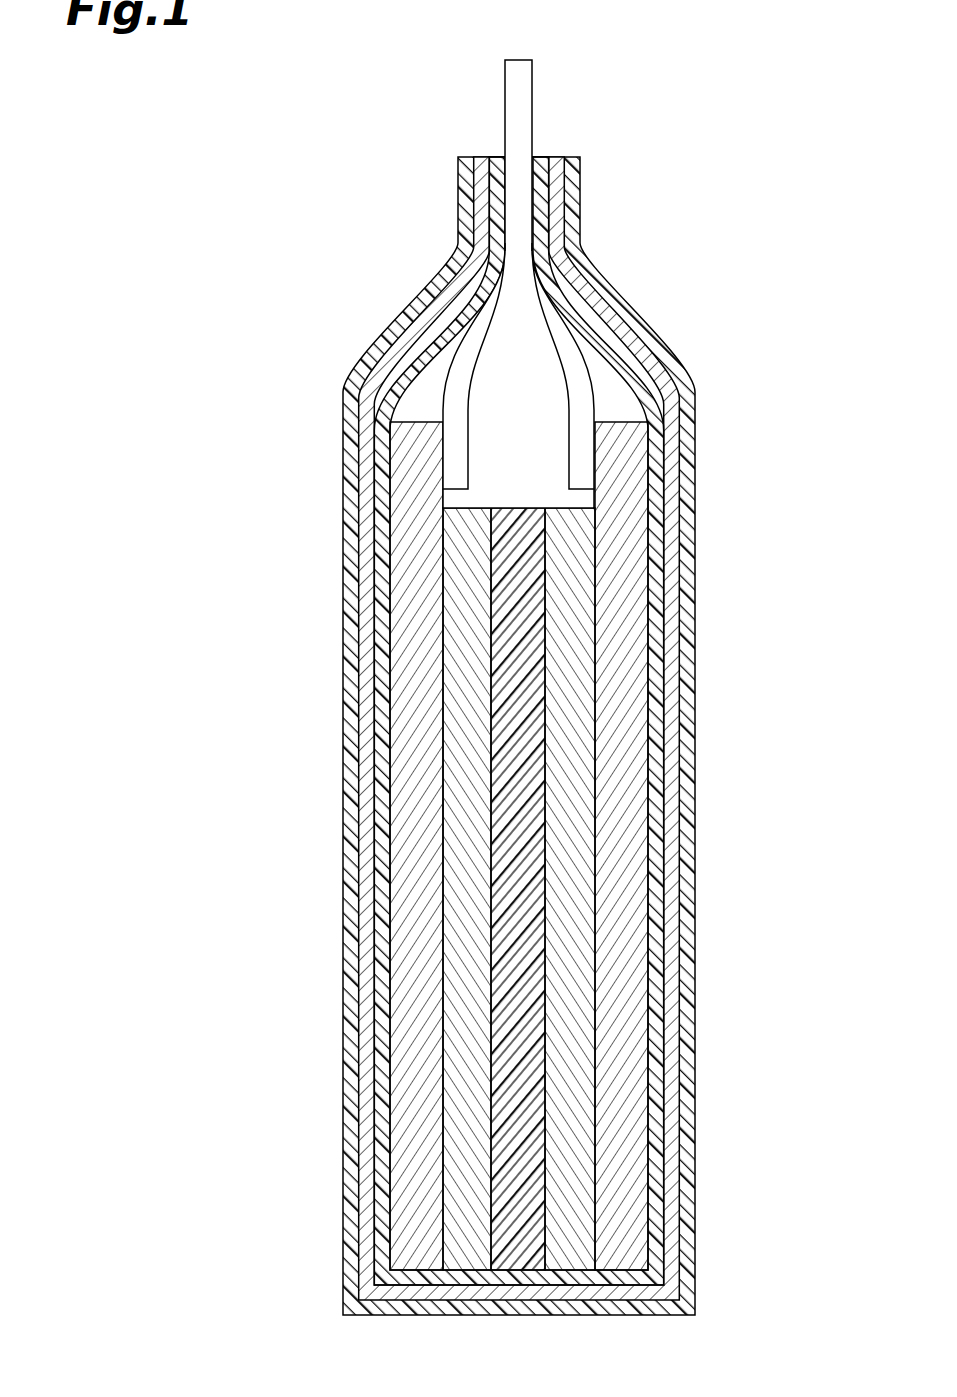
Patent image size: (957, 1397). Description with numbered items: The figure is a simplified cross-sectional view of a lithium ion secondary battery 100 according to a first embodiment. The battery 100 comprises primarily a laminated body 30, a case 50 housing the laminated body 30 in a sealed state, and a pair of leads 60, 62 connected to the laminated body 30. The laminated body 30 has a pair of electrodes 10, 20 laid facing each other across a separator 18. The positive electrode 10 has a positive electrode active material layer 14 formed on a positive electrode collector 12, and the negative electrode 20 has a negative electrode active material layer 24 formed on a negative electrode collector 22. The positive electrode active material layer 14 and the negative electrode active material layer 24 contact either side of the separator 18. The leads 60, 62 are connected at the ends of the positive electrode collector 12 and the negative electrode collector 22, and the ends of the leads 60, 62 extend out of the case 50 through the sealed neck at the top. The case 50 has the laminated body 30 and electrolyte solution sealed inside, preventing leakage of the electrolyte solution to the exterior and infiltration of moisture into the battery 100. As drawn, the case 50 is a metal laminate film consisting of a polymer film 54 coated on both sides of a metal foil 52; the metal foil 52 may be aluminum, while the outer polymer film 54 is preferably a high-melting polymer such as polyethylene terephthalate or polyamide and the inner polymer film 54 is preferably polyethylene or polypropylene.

The lithium ion secondary battery 100 is at (505, 661).
The positive electrode 10 is at (427, 846).
The positive electrode collector 12 is at (605, 633).
The positive electrode active material layer 14 is at (565, 677).
The separator 18 is at (515, 722).
The negative electrode 20 is at (349, 846).
The negative electrode collector 22 is at (410, 800).
The negative electrode active material layer 24 is at (455, 757).
The laminated body 30 is at (399, 846).
The case 50 is at (596, 736).
The metal foil 52 is at (672, 915).
The polymer film 54 is at (566, 736).
The lead 60 is at (490, 328).
The lead 62 is at (543, 328).